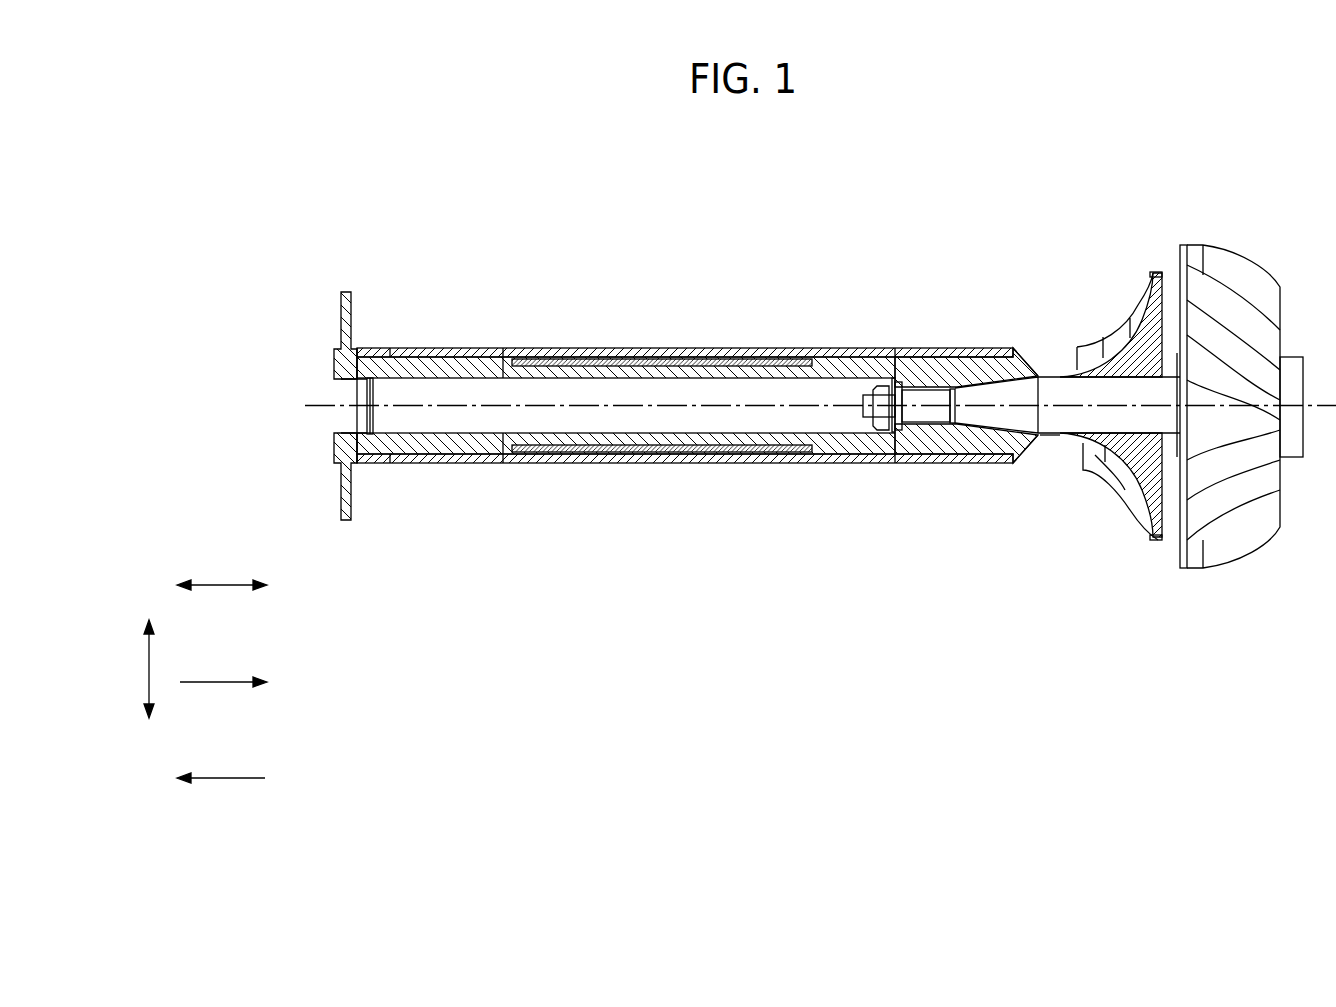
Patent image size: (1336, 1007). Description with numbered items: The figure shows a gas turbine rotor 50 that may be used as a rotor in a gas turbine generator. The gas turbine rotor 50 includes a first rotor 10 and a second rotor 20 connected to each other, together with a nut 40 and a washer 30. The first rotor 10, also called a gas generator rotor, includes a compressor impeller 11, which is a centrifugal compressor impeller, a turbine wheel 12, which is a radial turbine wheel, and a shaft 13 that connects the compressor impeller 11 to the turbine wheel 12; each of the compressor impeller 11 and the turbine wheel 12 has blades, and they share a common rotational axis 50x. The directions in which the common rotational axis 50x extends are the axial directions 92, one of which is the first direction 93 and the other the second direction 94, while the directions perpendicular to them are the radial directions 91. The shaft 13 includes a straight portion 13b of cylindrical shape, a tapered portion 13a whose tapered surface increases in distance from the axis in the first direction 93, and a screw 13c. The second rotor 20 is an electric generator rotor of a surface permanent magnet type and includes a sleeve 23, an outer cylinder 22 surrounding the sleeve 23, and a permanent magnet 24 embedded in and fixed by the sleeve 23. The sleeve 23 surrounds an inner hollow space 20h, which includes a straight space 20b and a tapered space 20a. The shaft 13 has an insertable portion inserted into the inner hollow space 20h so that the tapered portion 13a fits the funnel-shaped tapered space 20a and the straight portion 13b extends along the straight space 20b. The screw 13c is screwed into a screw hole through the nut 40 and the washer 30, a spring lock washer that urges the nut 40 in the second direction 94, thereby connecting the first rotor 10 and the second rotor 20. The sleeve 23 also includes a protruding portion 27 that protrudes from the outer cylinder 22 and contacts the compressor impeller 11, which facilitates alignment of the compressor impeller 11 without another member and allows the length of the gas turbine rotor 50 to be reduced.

The first rotor 10 is at (1317, 570).
The compressor impeller 11 is at (1118, 363).
The turbine wheel 12 is at (1217, 357).
The shaft 13 is at (1060, 393).
The tapered portion 13a is at (998, 370).
The straight portion 13b is at (934, 375).
The screw 13c is at (860, 384).
The second rotor 20 is at (1052, 611).
The tapered space 20a is at (995, 337).
The straight space 20b is at (961, 354).
The inner hollow space 20h is at (541, 384).
The outer cylinder 22 is at (375, 463).
The sleeve 23 is at (450, 373).
The permanent magnet 24 is at (684, 360).
The protruding portion 27 is at (1048, 437).
The washer 30 is at (887, 380).
The nut 40 is at (866, 421).
The gas turbine rotor 50 is at (407, 228).
The common rotational axis 50x is at (582, 404).
The radial directions 91 is at (147, 663).
The axial directions 92 is at (228, 582).
The first direction 93 is at (228, 679).
The second direction 94 is at (228, 775).